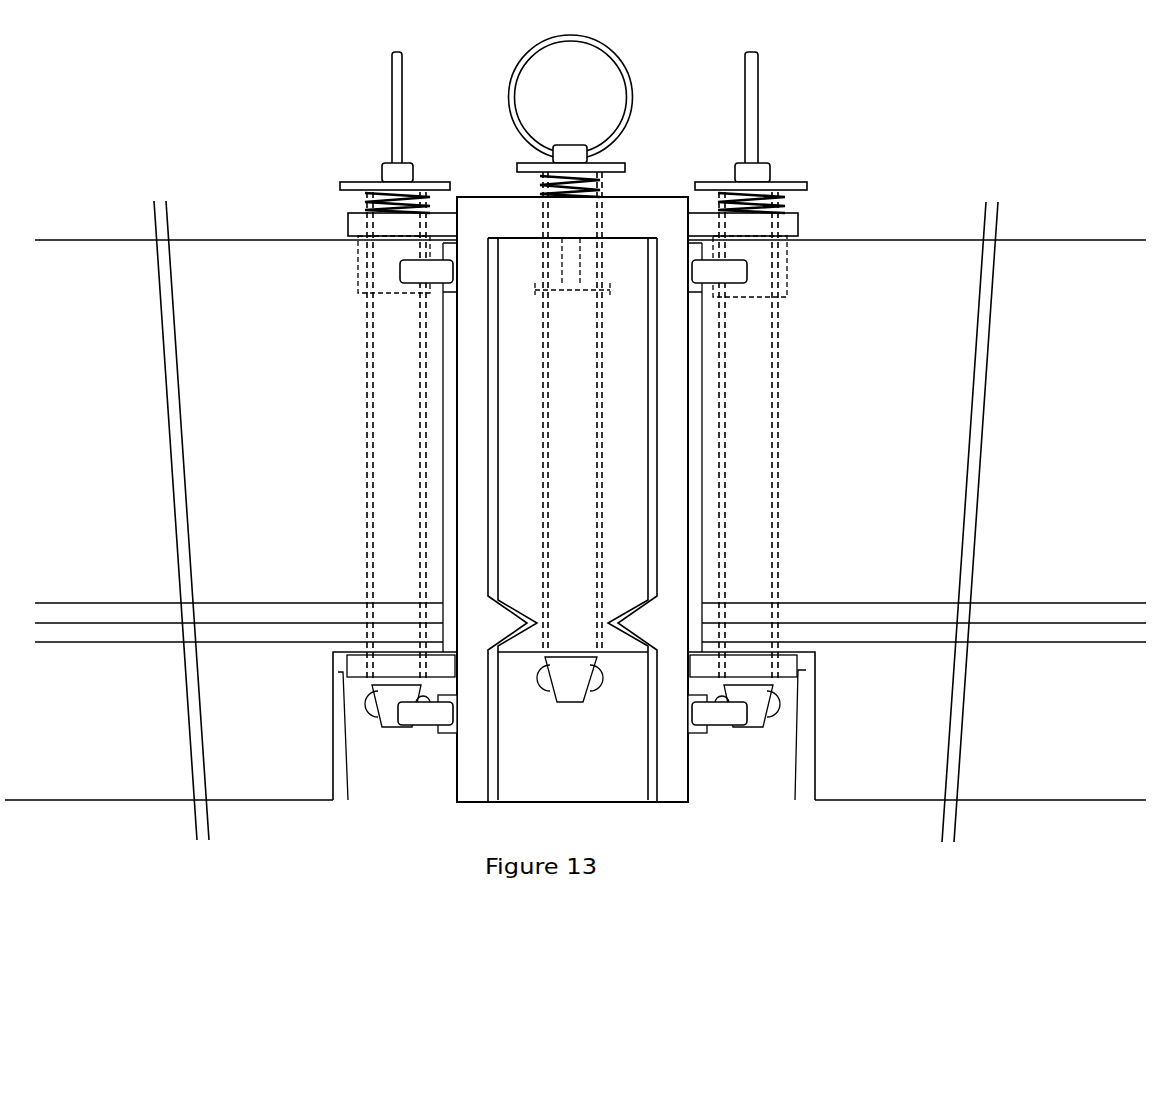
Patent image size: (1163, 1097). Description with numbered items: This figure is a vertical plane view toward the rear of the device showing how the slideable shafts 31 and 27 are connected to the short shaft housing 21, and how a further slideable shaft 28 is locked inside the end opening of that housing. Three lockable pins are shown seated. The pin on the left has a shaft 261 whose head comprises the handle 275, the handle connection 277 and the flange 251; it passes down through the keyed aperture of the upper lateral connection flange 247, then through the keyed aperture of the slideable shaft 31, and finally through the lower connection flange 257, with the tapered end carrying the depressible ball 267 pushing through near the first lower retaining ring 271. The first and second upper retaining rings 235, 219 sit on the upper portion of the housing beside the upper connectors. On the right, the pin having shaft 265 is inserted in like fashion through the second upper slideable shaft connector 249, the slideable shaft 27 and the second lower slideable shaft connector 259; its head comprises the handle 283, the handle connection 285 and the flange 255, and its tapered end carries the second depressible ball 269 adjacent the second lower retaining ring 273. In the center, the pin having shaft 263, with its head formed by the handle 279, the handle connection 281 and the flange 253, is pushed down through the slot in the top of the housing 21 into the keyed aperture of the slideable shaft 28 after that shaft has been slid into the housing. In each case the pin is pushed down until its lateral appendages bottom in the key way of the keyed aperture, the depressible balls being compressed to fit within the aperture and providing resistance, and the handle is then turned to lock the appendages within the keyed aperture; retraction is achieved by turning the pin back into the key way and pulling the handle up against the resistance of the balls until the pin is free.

The short shaft housing 21 is at (490, 231).
The slideable shaft 27 is at (879, 423).
The slideable shaft 28 is at (538, 455).
The slideable shaft 31 is at (287, 412).
The first upper retaining ring on third short shaft housing 219 is at (780, 278).
The second upper retaining ring on third short shaft housing 235 is at (400, 271).
The first upper slideable shaft connector on third short shaft housing 247 is at (348, 222).
The second upper slideable shaft connector on third short shaft housing 249 is at (798, 227).
The flange on seventh lockable pin 251 is at (341, 182).
The flange on eighth lockable pin 253 is at (524, 163).
The flange on ninth lockable pin 255 is at (795, 182).
The first lower slideable shaft connector on third short shaft housing 257 is at (393, 738).
The second lower slideable shaft connector on third short shaft housing 259 is at (751, 738).
The seventh slideable pin shaft 261 is at (416, 450).
The eighth slideable pin shaft 263 is at (591, 485).
The ninth slideable pin shaft 265 is at (768, 457).
The first depressible ball in tapered region of seventh lockable pin 267 is at (377, 724).
The second depressible ball in tapered region of ninth lockable pin 269 is at (766, 722).
The first lower retaining ring on third short shaft housing 271 is at (427, 725).
The second lower retaining ring on third short shaft housing 273 is at (718, 727).
The handle on seventh lockable pin 275 is at (402, 63).
The handle connection on seventh lockable pin 277 is at (388, 165).
The handle on eighth lockable pin 279 is at (618, 55).
The handle connection on eighth lockable pin 281 is at (588, 160).
The handle on ninth lockable pin 283 is at (760, 90).
The handle connection on ninth lockable pin 285 is at (765, 165).